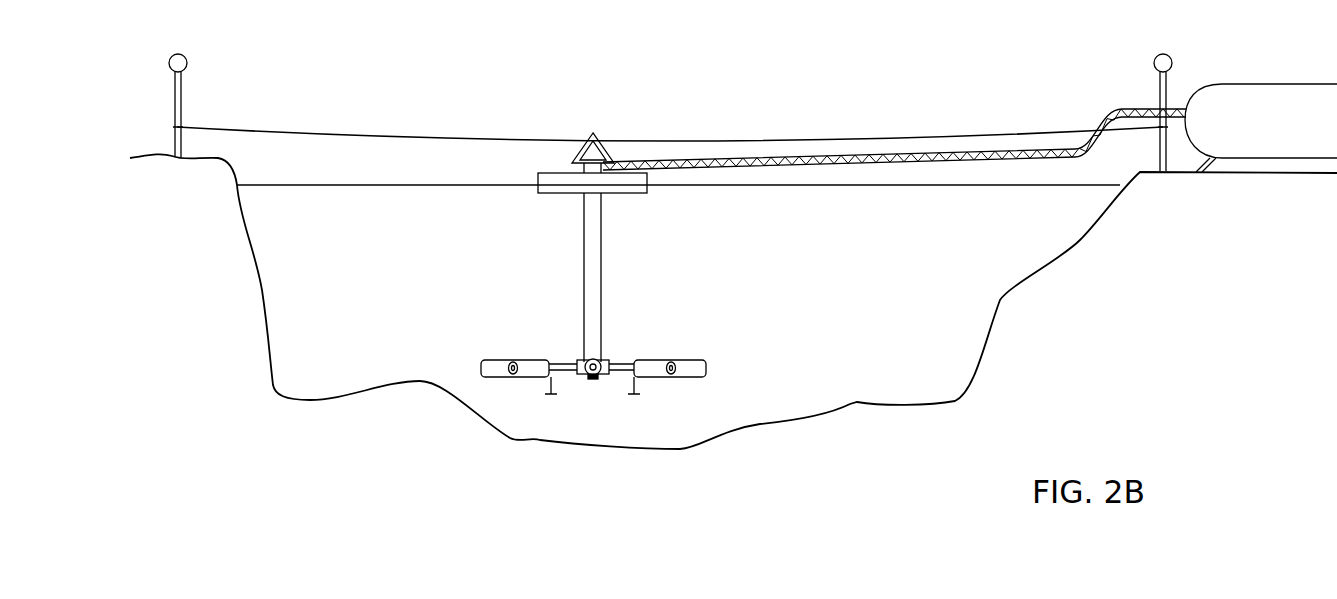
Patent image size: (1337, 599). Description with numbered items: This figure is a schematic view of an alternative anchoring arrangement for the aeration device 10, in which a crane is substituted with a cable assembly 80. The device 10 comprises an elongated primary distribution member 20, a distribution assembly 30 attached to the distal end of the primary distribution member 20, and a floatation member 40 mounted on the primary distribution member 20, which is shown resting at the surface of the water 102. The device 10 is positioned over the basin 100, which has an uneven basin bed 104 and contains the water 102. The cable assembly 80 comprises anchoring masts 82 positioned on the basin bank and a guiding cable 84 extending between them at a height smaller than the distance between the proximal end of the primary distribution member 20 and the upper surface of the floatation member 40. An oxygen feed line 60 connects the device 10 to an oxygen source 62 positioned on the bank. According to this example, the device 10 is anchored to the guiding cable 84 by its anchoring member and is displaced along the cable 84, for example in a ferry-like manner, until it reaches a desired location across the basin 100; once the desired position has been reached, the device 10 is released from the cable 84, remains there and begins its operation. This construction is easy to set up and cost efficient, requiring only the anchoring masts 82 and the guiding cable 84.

The aeration device 10 is at (636, 268).
The primary distribution member 20 is at (582, 312).
The distribution assembly 30 is at (617, 352).
The floatation member 40 is at (537, 199).
The oxygen feed line 60 is at (848, 153).
The oxygen source 62 is at (1252, 95).
The cable assembly 80 is at (153, 125).
The anchoring masts 82 is at (185, 85).
The guiding cable 84 is at (965, 126).
The basin 100 is at (356, 440).
The water 102 is at (310, 185).
The basin bed 104 is at (806, 421).